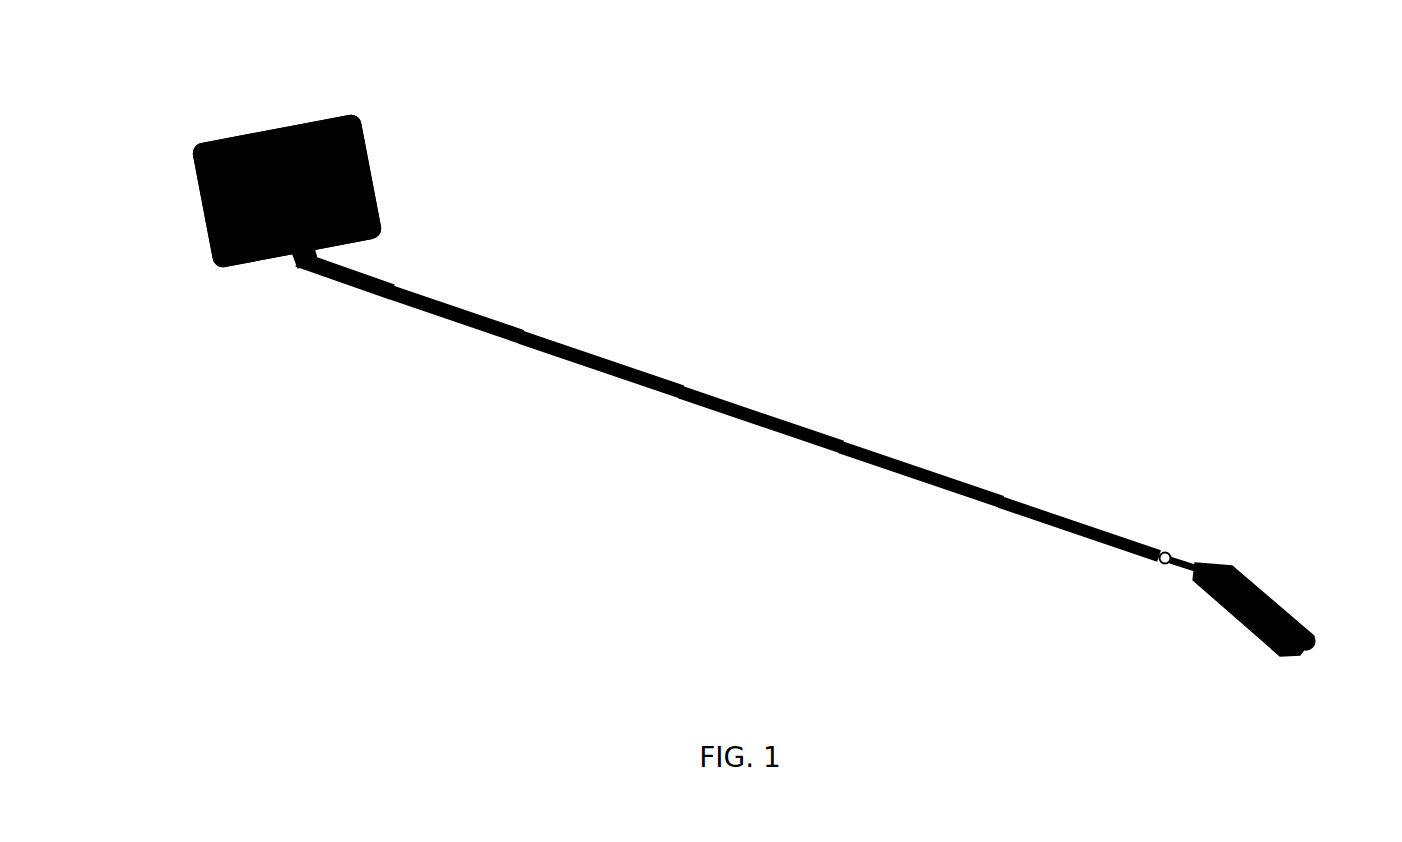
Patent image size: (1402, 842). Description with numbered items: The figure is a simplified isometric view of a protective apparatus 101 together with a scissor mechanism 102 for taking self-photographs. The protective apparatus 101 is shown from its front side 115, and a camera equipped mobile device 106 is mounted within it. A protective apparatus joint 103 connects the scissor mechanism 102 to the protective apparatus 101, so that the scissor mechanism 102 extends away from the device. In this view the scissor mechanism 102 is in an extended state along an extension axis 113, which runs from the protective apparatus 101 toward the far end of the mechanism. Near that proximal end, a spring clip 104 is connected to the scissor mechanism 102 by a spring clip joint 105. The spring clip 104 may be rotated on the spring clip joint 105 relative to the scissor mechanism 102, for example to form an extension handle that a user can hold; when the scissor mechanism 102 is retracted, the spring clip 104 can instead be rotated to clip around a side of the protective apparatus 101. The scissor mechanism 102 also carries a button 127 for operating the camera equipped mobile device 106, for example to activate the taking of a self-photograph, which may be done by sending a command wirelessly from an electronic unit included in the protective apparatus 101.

The protective apparatus 101 is at (391, 188).
The front side 115 is at (373, 113).
The camera equipped mobile device 106 is at (272, 157).
The protective apparatus joint 103 is at (286, 268).
The scissor mechanism 102 is at (707, 375).
The extension axis 113 is at (946, 524).
The button 127 is at (1179, 548).
The spring clip joint 105 is at (1245, 556).
The spring clip 104 is at (1314, 621).